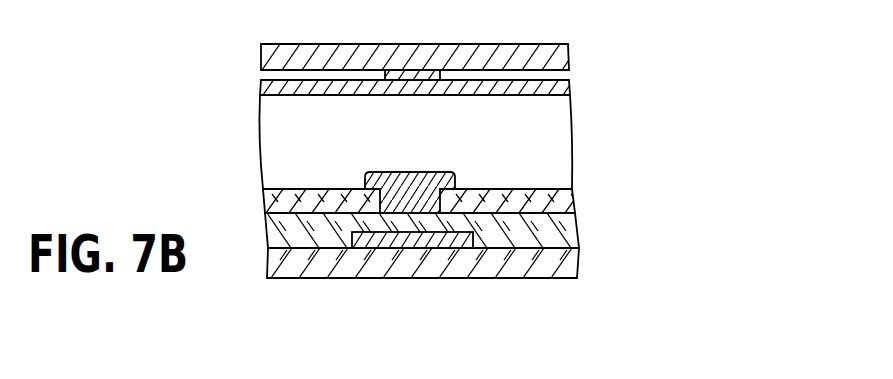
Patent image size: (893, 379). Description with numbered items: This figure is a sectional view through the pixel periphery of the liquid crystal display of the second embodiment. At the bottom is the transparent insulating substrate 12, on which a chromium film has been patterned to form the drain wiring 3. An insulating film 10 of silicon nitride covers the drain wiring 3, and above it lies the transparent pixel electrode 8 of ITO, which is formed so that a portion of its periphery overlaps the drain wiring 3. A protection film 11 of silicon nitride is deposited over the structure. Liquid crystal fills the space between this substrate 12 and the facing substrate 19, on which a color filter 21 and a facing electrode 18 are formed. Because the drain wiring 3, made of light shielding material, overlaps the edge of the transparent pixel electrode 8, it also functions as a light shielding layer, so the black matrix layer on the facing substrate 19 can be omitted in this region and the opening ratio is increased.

The facing substrate 19 is at (565, 57).
The color filter 21 is at (565, 72).
The facing electrode 18 is at (566, 88).
The transparent pixel electrode 8 is at (305, 193).
The protection film 11 is at (410, 183).
The insulating film 10 is at (571, 238).
The drain wiring 3 is at (430, 242).
The transparent insulating substrate 12 is at (572, 262).